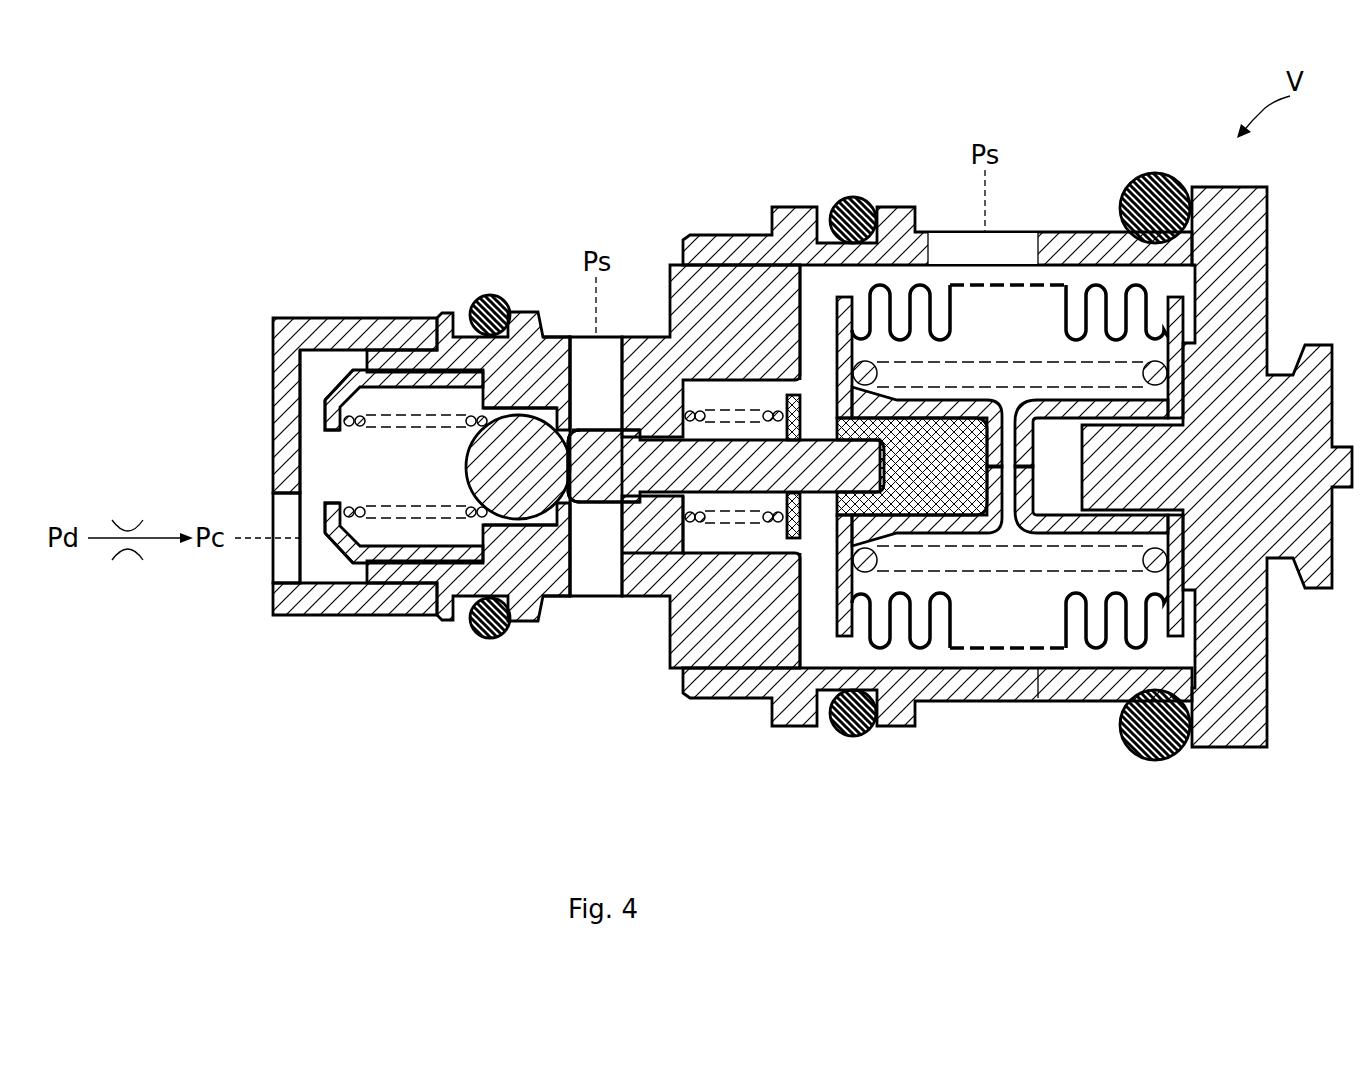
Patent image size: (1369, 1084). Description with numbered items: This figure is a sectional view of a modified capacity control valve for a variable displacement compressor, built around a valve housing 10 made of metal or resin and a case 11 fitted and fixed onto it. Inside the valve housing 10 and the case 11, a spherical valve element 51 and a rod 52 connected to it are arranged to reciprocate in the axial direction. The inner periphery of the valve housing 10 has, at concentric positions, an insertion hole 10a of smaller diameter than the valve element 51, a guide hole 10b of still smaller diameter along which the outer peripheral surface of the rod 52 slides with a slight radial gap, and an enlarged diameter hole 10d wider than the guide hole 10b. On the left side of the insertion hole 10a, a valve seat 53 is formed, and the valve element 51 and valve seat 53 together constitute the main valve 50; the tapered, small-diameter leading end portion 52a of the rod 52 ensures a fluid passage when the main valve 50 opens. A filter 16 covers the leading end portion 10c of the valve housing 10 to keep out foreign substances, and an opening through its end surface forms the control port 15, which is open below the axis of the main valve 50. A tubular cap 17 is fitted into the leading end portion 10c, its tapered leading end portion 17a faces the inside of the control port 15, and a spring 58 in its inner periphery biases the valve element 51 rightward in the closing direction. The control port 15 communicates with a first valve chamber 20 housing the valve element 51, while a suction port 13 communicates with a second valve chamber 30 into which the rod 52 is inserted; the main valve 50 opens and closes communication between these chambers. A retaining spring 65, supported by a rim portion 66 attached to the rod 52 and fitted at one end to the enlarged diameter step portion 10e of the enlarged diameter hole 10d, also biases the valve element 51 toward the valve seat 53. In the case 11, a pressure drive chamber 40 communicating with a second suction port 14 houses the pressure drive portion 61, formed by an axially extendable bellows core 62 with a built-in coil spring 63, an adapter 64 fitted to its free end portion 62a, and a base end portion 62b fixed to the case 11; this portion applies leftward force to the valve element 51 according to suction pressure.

The valve housing 10 is at (753, 260).
The insertion hole 10a is at (535, 420).
The guide hole 10b is at (712, 393).
The leading end portion 10c is at (405, 352).
The enlarged diameter hole 10d is at (788, 338).
The enlarged diameter step portion 10e is at (700, 555).
The case 11 is at (1212, 188).
The suction port 13 is at (566, 400).
The second suction port 14 is at (928, 234).
The control port 15 is at (283, 570).
The filter 16 is at (305, 330).
The tubular cap 17 is at (368, 375).
The tapered leading end portion 17a is at (322, 522).
The first valve chamber 20 is at (428, 445).
The second valve chamber 30 is at (601, 398).
The pressure drive chamber 40 is at (820, 296).
The main valve 50 is at (508, 708).
The valve element 51 is at (543, 490).
The rod 52 is at (727, 468).
The leading end portion 52a is at (590, 440).
The valve seat 53 is at (581, 485).
The spring 58 is at (356, 522).
The pressure drive portion 61 is at (991, 665).
The bellows core 62 is at (1088, 640).
The free end portion 62a is at (845, 600).
The base end portion 62b is at (1176, 635).
The coil spring 63 is at (915, 520).
The adapter 64 is at (962, 534).
The retaining spring 65 is at (762, 526).
The rim portion 66 is at (794, 540).